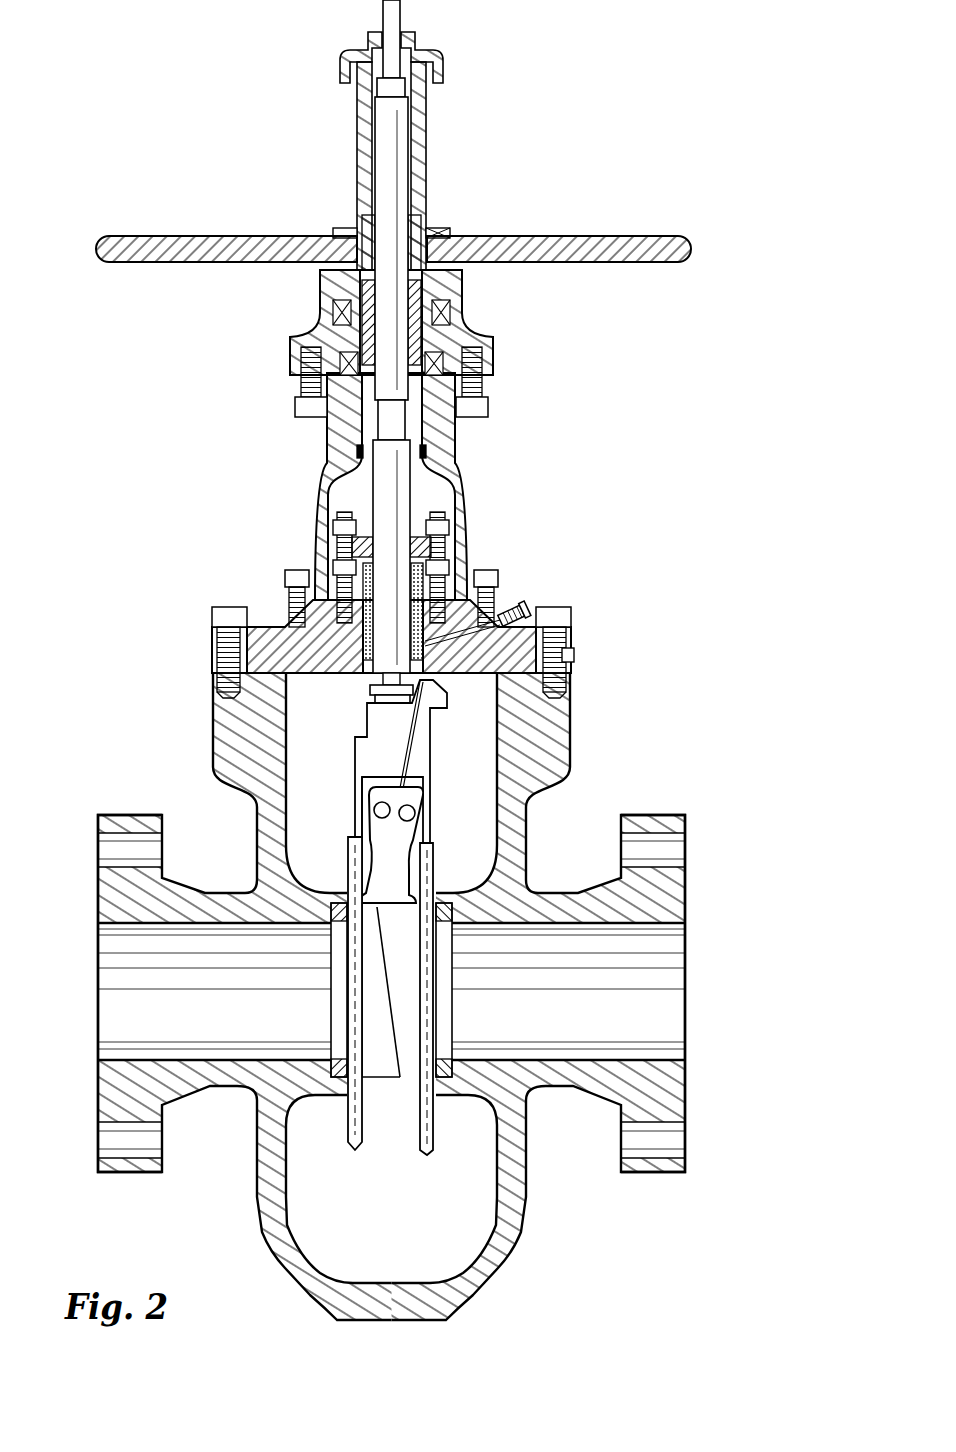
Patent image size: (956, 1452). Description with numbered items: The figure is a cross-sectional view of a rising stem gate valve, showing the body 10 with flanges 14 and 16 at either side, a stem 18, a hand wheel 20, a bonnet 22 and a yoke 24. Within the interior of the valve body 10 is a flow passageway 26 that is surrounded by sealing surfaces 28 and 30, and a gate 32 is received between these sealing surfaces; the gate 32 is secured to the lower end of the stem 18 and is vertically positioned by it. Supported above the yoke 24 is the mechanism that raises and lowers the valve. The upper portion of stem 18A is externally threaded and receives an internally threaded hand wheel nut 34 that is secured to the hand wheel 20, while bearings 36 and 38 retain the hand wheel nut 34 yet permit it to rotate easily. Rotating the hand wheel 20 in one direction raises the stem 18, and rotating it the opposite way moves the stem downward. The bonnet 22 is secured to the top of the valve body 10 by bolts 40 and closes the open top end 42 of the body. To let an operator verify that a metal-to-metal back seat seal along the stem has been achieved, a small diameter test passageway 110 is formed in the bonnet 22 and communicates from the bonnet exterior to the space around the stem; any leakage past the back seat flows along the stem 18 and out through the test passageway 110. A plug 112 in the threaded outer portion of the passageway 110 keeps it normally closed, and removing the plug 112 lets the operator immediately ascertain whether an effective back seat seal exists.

The body 10 is at (545, 752).
The flange 14 is at (662, 820).
The flange 16 is at (132, 822).
The stem 18 is at (397, 503).
The upper portion of stem 18A is at (393, 157).
The hand wheel 20 is at (598, 243).
The bonnet 22 is at (282, 630).
The yoke 24 is at (462, 508).
The flow passageway 26 is at (622, 1062).
The sealing surface 28 is at (426, 928).
The sealing surface 30 is at (422, 1052).
The gate 32 is at (405, 1010).
The hand wheel nut 34 is at (442, 230).
The bearing 36 is at (440, 313).
The bearing 38 is at (437, 367).
The bolts 40 is at (570, 640).
The open top end 42 is at (574, 655).
The test passageway 110 is at (503, 611).
The plug 112 is at (525, 607).